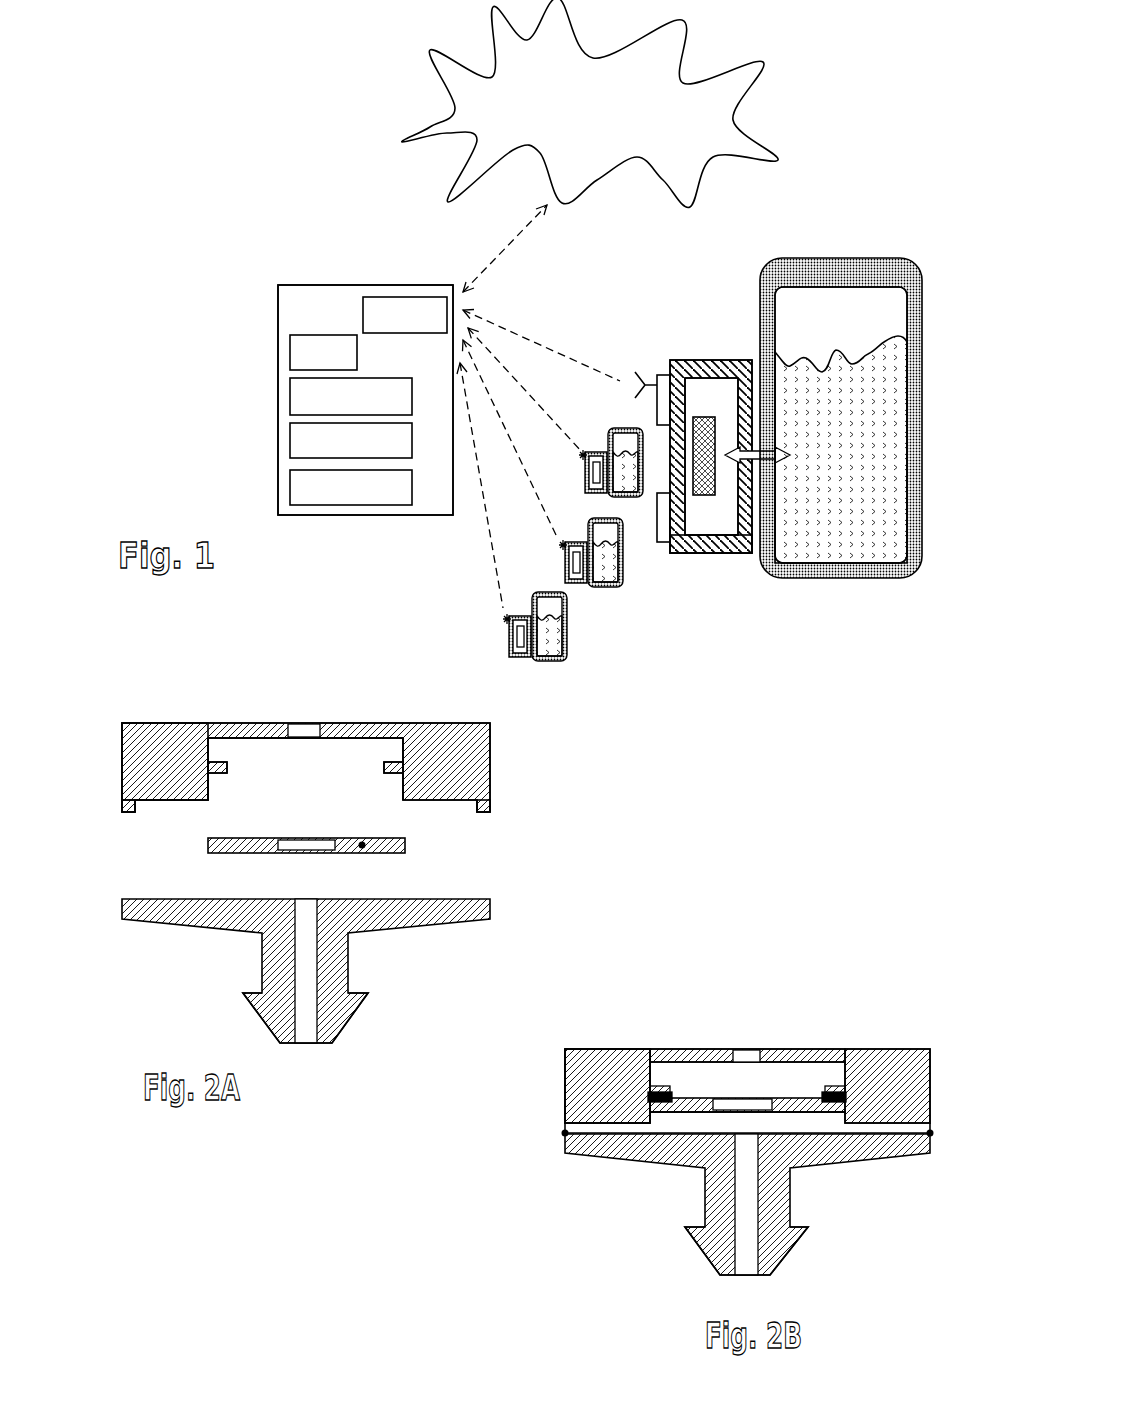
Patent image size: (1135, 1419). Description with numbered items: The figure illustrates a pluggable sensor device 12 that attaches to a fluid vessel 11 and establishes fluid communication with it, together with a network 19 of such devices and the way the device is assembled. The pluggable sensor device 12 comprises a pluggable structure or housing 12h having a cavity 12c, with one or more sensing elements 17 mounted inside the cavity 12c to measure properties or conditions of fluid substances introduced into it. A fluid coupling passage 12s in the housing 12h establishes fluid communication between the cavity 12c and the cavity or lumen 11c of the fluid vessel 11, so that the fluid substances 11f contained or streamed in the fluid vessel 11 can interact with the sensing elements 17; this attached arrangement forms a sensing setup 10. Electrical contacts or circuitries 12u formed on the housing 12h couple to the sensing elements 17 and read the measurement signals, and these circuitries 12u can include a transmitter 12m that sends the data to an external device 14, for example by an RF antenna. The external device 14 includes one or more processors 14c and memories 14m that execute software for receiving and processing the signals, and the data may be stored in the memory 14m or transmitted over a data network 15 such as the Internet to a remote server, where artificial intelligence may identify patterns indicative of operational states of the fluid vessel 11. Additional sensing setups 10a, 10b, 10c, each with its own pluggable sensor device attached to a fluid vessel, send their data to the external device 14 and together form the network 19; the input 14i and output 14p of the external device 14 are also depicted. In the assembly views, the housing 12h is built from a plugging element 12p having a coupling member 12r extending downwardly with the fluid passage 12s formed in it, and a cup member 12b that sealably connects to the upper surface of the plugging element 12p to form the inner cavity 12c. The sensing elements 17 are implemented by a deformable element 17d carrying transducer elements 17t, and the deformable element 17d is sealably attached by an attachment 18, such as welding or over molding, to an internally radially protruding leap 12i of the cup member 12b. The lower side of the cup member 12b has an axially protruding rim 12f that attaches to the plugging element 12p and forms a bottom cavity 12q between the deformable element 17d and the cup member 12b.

In FIG. 1, the sensing setup 10 is at (791, 547).
In FIG. 1, the sensing setup 10a is at (600, 452).
In FIG. 1, the sensing setup 10b is at (580, 518).
In FIG. 1, the sensing setup 10c is at (522, 615).
In FIG. 1, the fluid vessel 11 is at (873, 258).
In FIG. 1, the cavity/lumen of the fluid vessel 11c is at (820, 312).
In FIG. 1, the fluid substances 11f is at (792, 370).
In FIG. 1, the pluggable sensor device 12 is at (740, 553).
In FIG. 2A, the pluggable sensor device 12 is at (272, 767).
In FIG. 2B, the pluggable sensor device 12 is at (747, 1034).
In FIG. 2A, the cup member 12b is at (153, 752).
In FIG. 2B, the cup member 12b is at (608, 1050).
In FIG. 1, the cavity 12c is at (718, 535).
In FIG. 2A, the cavity 12c is at (395, 748).
In FIG. 2B, the cavity 12c is at (835, 1075).
In FIG. 2A, the axially protruding rim 12f is at (128, 812).
In FIG. 1, the pluggable structure/assembly 12h is at (736, 342).
In FIG. 2A, the pluggable structure/assembly 12h is at (588, 787).
In FIG. 2B, the pluggable structure/assembly 12h is at (535, 1163).
In FIG. 2A, the internally radially protruding leap 12i is at (384, 768).
In FIG. 1, the transmitter 12m is at (628, 369).
In FIG. 2A, the plugging element 12p is at (305, 725).
In FIG. 2B, the plugging element 12p is at (745, 1060).
In FIG. 2B, the bottom cavity 12q is at (602, 1130).
In FIG. 2A, the coupling member 12r is at (346, 1011).
In FIG. 2B, the coupling member 12r is at (791, 1242).
In FIG. 1, the fluid coupling passage 12s is at (722, 440).
In FIG. 2A, the fluid coupling passage 12s is at (305, 985).
In FIG. 2B, the fluid coupling passage 12s is at (750, 1206).
In FIG. 1, the electrical contacts/circuitries 12u is at (660, 427).
In FIG. 1, the external device 14 is at (340, 285).
In FIG. 1, the processor 14c is at (290, 352).
In FIG. 1, the input 14i is at (290, 488).
In FIG. 2B, the input 14i is at (660, 1090).
In FIG. 1, the memory 14m is at (405, 297).
In FIG. 1, the output 14p is at (290, 442).
In FIG. 1, the data network 15 is at (447, 88).
In FIG. 1, the sensing element 17 is at (700, 417).
In FIG. 2A, the sensing element 17 is at (424, 845).
In FIG. 2B, the sensing element 17 is at (930, 1136).
In FIG. 2A, the deformable element 17d is at (362, 845).
In FIG. 2B, the deformable element 17d is at (697, 1110).
In FIG. 2A, the transducer element 17t is at (290, 843).
In FIG. 2B, the transducer element 17t is at (758, 1098).
In FIG. 2B, the attachment 18 is at (830, 1087).
In FIG. 1, the network 19 is at (365, 431).